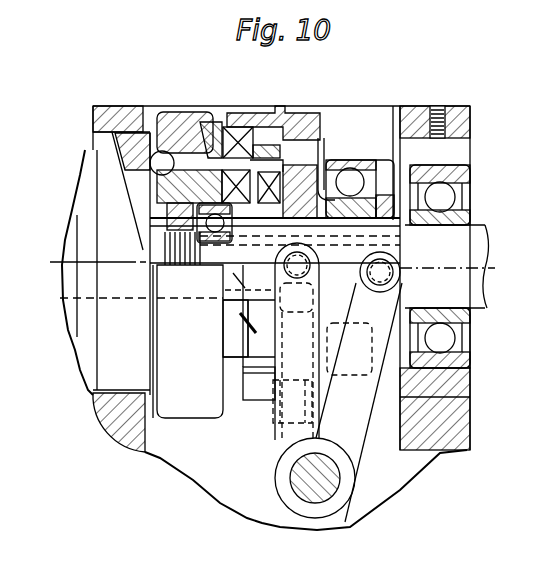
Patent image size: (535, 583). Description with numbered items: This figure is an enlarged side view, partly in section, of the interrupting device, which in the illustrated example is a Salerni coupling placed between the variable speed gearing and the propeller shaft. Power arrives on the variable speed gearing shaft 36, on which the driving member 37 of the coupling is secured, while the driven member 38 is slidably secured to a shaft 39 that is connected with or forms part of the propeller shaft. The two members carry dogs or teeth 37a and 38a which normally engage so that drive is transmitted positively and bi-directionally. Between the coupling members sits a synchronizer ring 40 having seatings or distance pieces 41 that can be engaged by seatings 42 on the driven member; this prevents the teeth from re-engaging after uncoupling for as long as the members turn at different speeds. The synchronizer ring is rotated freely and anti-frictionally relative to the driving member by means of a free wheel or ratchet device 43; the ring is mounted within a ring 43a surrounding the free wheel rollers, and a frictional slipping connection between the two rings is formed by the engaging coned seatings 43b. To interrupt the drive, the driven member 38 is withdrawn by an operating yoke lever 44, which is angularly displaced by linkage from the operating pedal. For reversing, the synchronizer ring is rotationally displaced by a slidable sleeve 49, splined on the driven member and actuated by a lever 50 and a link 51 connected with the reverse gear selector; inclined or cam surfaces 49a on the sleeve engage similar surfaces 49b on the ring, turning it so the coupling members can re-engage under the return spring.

The variable speed gearing shaft 36 is at (150, 233).
The driving member 37 is at (150, 176).
The dogs or teeth 37a is at (263, 128).
The driven member 38 is at (330, 158).
The dogs or teeth 38a is at (335, 118).
The shaft 39 is at (395, 243).
The synchronizer ring 40 is at (232, 130).
The seatings or distance pieces 41 is at (245, 128).
The seatings 42 is at (297, 135).
The free wheel or ratchet device 43 is at (97, 133).
The ring 43a is at (185, 120).
The coned seatings 43b is at (213, 122).
The operating yoke lever 44 is at (358, 418).
The slidable sleeve 49 is at (222, 381).
The inclined or cam surfaces 49a is at (257, 335).
The inclined or cam surfaces 49b is at (238, 315).
The lever 50 is at (283, 435).
The link 51 is at (142, 298).